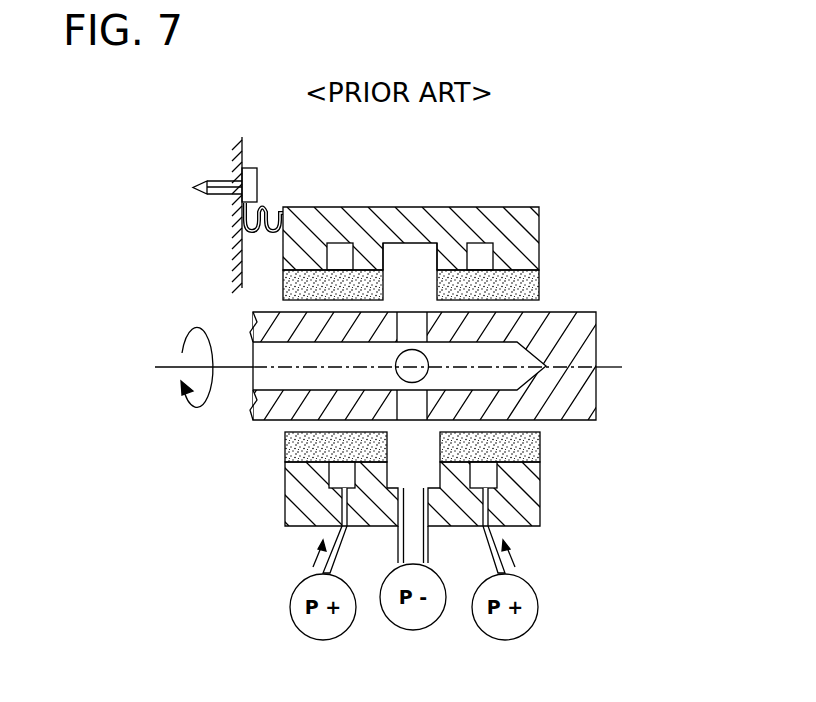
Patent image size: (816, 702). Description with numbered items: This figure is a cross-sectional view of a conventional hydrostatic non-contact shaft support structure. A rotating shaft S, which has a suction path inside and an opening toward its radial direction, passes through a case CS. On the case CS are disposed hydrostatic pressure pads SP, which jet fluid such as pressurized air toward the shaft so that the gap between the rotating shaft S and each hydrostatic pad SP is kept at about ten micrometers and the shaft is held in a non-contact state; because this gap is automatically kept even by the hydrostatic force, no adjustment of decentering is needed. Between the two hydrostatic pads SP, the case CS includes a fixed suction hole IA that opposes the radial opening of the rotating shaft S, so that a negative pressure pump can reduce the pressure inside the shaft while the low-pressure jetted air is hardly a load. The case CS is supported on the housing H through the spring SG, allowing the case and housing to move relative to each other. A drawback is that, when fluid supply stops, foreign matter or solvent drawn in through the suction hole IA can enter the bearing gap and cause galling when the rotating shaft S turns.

The housing H is at (243, 146).
The spring SG is at (265, 204).
The case CS is at (488, 206).
The fixed suction hole IA is at (405, 250).
The hydrostatic pressure pad SP is at (540, 283).
The rotating shaft S is at (597, 330).